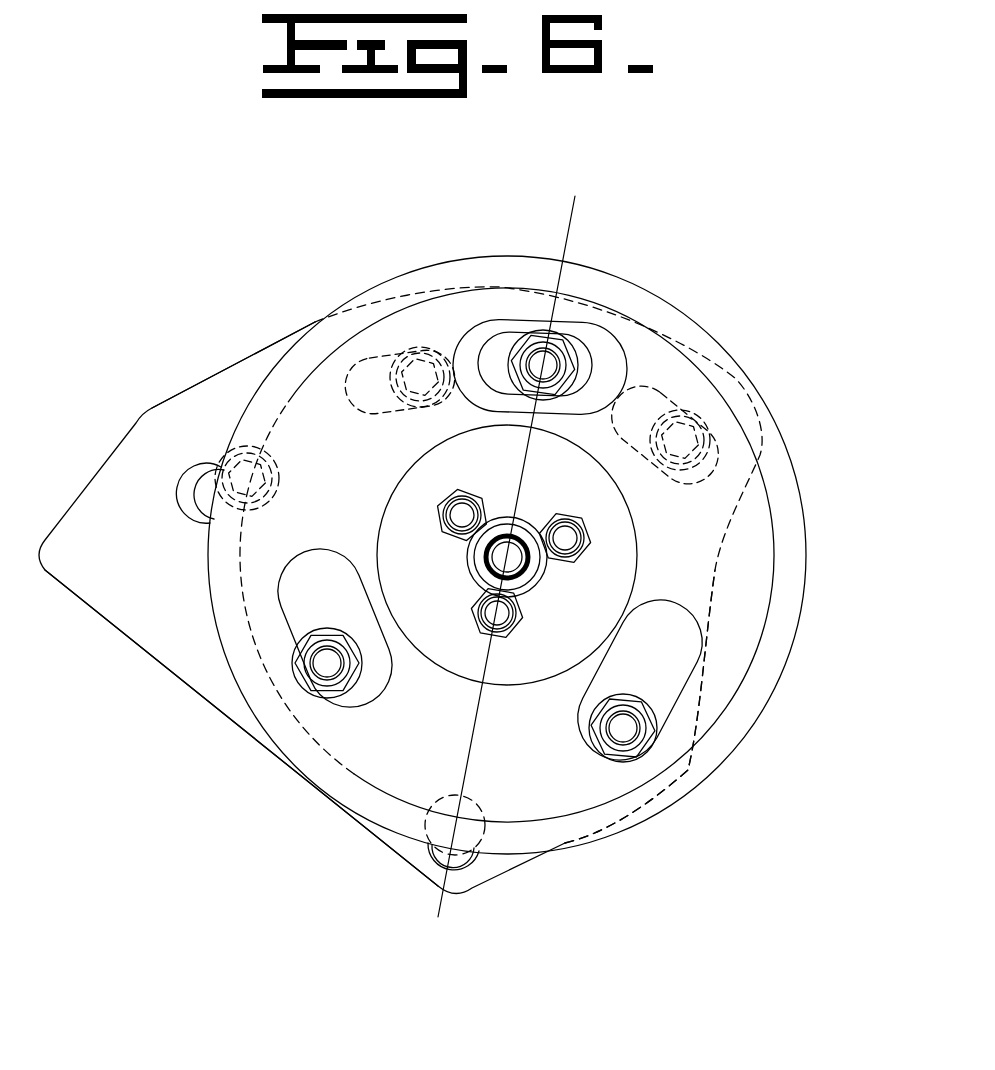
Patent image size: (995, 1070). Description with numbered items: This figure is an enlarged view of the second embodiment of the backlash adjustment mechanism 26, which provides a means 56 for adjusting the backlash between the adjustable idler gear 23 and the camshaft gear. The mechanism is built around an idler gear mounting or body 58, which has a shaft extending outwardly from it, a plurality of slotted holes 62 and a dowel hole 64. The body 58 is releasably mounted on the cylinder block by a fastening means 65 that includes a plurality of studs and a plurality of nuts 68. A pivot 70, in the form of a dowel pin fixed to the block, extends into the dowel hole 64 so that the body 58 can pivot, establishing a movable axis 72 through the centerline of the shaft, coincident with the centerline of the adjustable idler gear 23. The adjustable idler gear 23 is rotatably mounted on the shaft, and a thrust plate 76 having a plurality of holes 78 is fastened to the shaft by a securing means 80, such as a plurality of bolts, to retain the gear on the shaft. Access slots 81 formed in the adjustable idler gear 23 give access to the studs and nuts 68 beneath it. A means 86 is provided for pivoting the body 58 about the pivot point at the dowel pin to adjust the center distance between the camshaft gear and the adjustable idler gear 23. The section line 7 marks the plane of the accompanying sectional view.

The section line 7- 7 is at (575, 196).
The adjustable idler gear 23 is at (690, 318).
The backlash adjustment mechanism 26 is at (236, 767).
The means for adjusting the backlash 56 is at (200, 375).
The idler gear mounting 58 is at (85, 492).
The slotted holes 62 is at (550, 333).
The dowel hole 64 is at (470, 866).
The fastening means 65 is at (602, 378).
The nuts 68 is at (565, 338).
The pivot 70 is at (440, 863).
The movable axis 72 is at (495, 548).
The thrust plate 76 is at (612, 604).
The holes 78 is at (575, 528).
The securing means 80 is at (580, 541).
The access slots 81 is at (703, 688).
The means for pivoting the body 86 is at (494, 336).